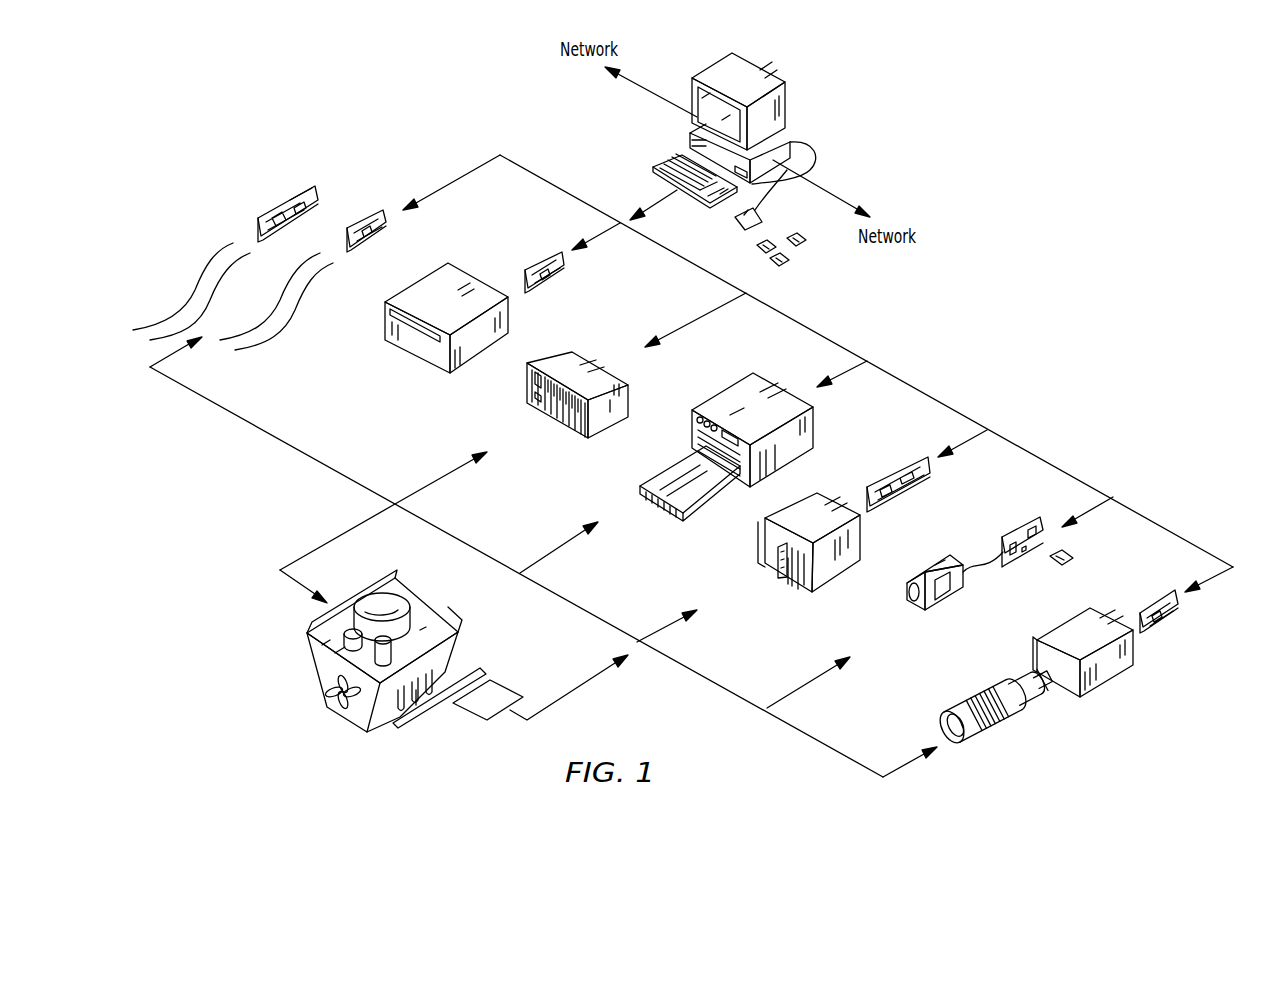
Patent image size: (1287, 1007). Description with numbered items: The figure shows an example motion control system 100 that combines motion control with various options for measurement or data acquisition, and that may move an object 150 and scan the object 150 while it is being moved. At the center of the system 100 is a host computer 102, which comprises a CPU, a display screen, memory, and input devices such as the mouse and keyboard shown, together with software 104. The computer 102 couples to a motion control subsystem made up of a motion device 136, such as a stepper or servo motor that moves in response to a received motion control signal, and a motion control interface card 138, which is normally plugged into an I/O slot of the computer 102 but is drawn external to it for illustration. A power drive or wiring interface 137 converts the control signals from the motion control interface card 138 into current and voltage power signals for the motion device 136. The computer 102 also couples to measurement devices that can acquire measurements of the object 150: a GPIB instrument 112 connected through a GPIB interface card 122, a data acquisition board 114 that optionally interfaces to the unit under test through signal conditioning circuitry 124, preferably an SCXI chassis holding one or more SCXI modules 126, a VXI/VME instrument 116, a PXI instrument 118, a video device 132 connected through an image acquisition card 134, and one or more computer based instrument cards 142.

The motion control system 100 is at (1078, 117).
The host computer 102 is at (740, 73).
The software 104 is at (785, 260).
The GPIB instrument 112 is at (428, 292).
The data acquisition board 114 is at (920, 458).
The VXI/VME instrument 116 is at (733, 402).
The PXI instrument 118 is at (555, 363).
The GPIB interface card 122 is at (540, 260).
The signal conditioning circuitry 124 is at (772, 553).
The SCXI module 126 is at (785, 563).
The video device 132 is at (943, 592).
The image acquisition card 134 is at (1020, 530).
The motion device 136 is at (980, 737).
The power drive 137 is at (1103, 670).
The motion control interface card 138 is at (1160, 623).
The computer based instrument card 142 is at (258, 217).
The object 150 is at (322, 665).